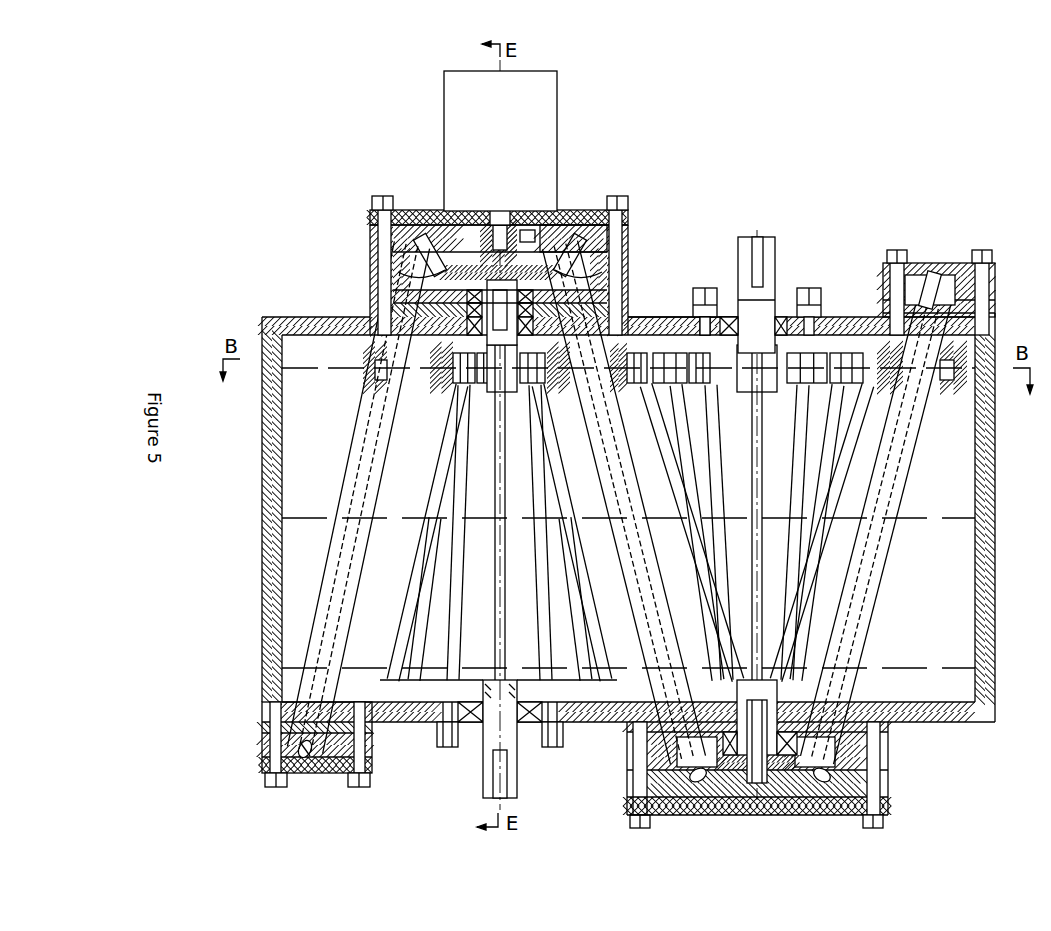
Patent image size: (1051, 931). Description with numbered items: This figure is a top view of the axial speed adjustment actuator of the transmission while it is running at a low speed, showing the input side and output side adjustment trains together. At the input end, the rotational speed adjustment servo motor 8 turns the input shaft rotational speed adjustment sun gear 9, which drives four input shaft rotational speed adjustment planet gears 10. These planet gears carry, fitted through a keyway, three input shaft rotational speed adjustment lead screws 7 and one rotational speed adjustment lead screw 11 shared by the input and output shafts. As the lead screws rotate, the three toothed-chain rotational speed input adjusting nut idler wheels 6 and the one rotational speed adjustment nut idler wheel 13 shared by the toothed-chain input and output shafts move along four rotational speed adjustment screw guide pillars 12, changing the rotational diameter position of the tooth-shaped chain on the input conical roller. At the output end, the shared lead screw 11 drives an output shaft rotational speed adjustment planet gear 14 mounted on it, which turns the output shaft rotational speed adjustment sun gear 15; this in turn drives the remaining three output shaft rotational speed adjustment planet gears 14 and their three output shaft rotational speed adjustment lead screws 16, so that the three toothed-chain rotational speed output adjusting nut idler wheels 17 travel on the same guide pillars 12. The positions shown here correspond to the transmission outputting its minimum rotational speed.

The toothed-chain rotational speed input adjusting nut idler wheel 6 is at (321, 231).
The input shaft rotational speed adjustment lead screw 7 is at (463, 170).
The rotational speed adjustment servo motor 8 is at (475, 197).
The input shaft rotational speed adjustment sun gear 9 is at (574, 183).
The input shaft rotational speed adjustment planet gear 10 is at (632, 225).
The rotational speed adjustment lead screw shared by the input and output shafts 11 is at (660, 230).
The rotational speed adjustment screw guide pillar 12 is at (698, 225).
The rotational speed adjustment nut idler wheel shared by the toothed-chain input an 13 is at (736, 234).
The output shaft rotational speed adjustment planet gear 14 is at (757, 827).
The output shaft rotational speed adjustment sun gear 15 is at (727, 810).
The output shaft rotational speed adjustment lead screw 16 is at (906, 790).
The toothed-chain rotational speed output adjusting nut idler wheel 17 is at (939, 225).